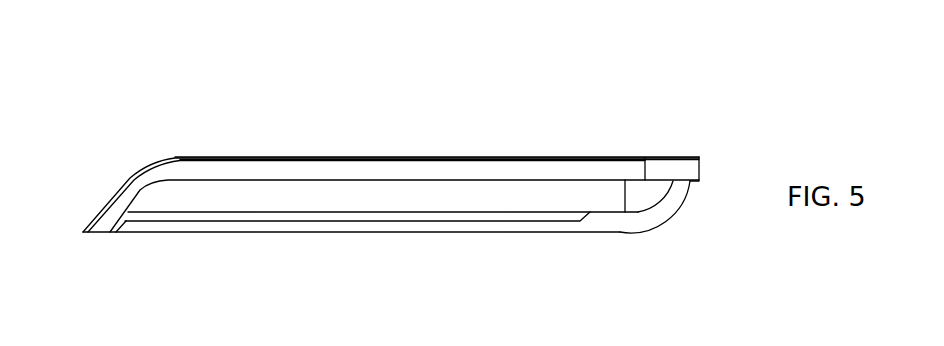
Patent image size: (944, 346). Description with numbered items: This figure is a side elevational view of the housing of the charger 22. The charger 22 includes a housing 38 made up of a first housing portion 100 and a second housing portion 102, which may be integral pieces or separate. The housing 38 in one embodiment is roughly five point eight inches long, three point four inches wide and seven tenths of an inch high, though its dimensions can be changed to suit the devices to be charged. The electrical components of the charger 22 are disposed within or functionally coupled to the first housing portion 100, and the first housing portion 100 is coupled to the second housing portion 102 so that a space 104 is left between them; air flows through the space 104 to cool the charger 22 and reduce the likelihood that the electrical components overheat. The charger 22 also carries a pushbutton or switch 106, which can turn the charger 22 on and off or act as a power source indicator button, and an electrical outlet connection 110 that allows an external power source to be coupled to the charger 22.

The charger 22 is at (228, 63).
The housing 38 is at (672, 158).
The first housing portion 100 is at (435, 202).
The second housing portion 102 is at (452, 160).
The space 104 is at (186, 213).
The pushbutton or switch 106 is at (118, 188).
The electrical outlet connection 110 is at (672, 207).